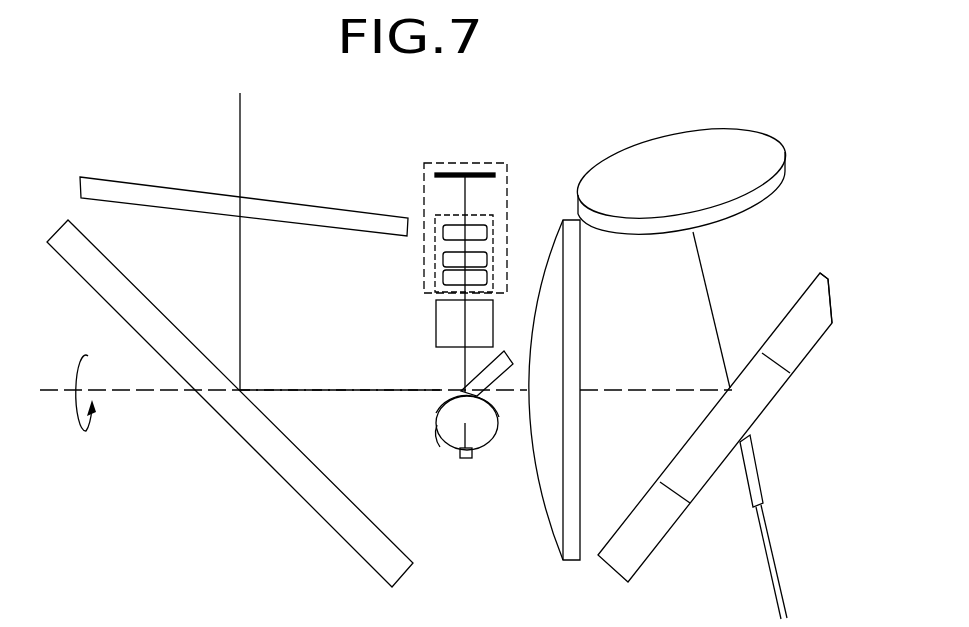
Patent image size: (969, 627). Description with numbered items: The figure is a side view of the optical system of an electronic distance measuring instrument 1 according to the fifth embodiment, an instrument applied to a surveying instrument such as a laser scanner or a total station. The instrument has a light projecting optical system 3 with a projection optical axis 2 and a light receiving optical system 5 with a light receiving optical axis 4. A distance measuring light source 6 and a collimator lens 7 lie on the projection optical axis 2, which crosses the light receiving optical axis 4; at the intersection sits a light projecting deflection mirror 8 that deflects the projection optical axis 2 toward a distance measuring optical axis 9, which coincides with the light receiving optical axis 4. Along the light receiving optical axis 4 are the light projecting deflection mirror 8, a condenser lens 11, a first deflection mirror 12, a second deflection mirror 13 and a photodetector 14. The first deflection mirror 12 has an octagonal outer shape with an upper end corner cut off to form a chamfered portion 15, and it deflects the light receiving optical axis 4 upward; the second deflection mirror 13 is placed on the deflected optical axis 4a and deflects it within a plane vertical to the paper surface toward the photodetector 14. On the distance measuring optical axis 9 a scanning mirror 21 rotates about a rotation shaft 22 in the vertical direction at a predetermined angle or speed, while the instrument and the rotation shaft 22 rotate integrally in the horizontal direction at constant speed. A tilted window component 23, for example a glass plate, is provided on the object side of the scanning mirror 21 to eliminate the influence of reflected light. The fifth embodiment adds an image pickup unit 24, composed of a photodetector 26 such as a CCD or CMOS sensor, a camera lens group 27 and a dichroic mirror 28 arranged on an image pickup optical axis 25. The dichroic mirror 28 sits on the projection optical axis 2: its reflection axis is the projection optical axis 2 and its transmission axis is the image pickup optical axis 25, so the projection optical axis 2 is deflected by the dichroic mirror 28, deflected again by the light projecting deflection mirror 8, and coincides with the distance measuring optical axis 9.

The electronic distance measuring instrument 1 is at (646, 98).
The projection optical axis 2 is at (470, 437).
The light projecting optical system 3 is at (410, 435).
The light receiving optical axis 4 is at (655, 388).
The optical axis 4a is at (703, 281).
The light receiving optical system 5 is at (812, 242).
The distance measuring light source 6 is at (466, 459).
The collimator lens 7 is at (437, 447).
The light projecting deflection mirror 8 is at (505, 376).
The distance measuring optical axis 9 is at (322, 389).
The condenser lens 11 is at (581, 303).
The first deflection mirror 12 is at (658, 543).
The second deflection mirror 13 is at (738, 217).
The photodetector 14 is at (757, 450).
The chamfered portion 15 is at (829, 306).
The scanning mirror 21 is at (262, 458).
The rotation shaft 22 is at (142, 392).
The window component 23 is at (130, 183).
The image pickup unit 24 is at (522, 175).
The image pickup optical axis 25 is at (465, 200).
The photodetector 26 is at (476, 172).
The camera lens group 27 is at (435, 252).
The dichroic mirror 28 is at (436, 328).